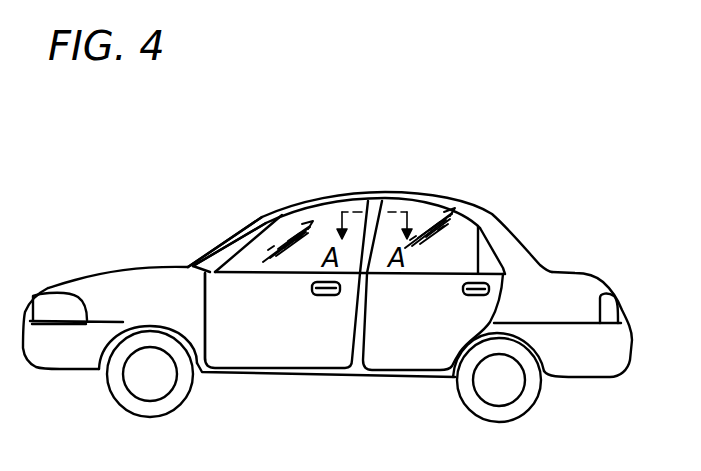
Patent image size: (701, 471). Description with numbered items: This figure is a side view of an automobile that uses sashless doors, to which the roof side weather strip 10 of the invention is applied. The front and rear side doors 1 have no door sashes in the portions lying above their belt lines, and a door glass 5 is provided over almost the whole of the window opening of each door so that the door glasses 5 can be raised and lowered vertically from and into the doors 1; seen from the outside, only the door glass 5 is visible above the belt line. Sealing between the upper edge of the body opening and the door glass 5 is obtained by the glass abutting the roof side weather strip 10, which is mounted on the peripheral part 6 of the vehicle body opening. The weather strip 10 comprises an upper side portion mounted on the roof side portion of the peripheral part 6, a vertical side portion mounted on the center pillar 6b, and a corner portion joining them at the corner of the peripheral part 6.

The door 1 is at (293, 333).
The door glass 5 is at (418, 220).
The peripheral part of the vehicle body opening 6 is at (247, 229).
The center pillar 6b is at (383, 201).
The roof side weather strip 10 is at (282, 216).